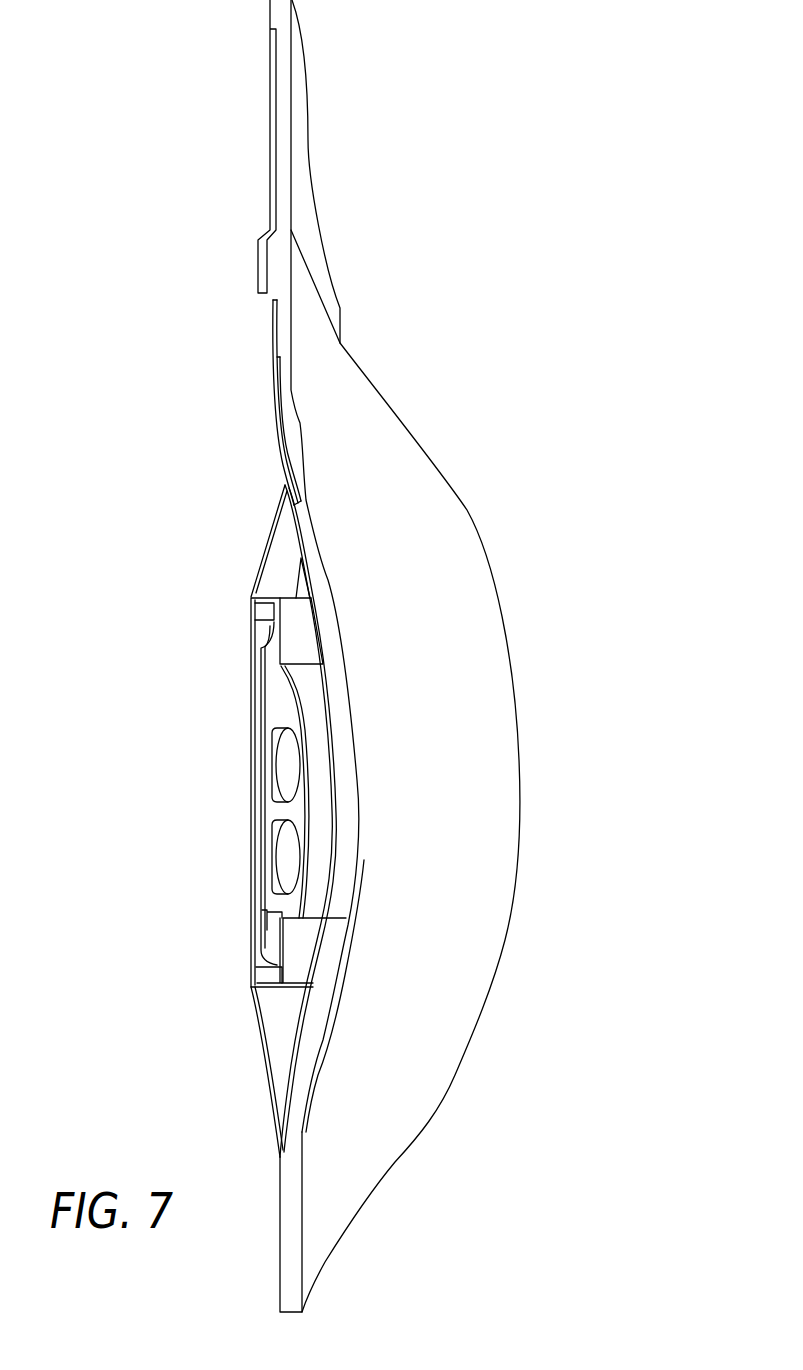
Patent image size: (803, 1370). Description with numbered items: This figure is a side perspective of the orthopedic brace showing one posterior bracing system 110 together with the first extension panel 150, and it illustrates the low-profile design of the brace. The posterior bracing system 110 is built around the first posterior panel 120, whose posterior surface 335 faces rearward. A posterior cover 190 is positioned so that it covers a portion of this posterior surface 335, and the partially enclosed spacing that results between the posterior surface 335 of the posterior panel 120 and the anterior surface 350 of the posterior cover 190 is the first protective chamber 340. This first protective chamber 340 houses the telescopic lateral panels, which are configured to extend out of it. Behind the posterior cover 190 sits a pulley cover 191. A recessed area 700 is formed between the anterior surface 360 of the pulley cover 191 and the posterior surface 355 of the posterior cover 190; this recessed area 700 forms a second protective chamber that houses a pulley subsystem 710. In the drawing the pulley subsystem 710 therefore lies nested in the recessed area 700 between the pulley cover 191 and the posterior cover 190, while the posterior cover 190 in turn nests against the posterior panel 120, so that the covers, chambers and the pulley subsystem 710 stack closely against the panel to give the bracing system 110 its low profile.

The posterior bracing system 110 is at (407, 298).
The first posterior panel 120 is at (517, 791).
The first extension panel 150 is at (295, 142).
The posterior cover 190 is at (266, 548).
The pulley cover 191 is at (252, 657).
The recessed area 700 is at (254, 628).
The pulley subsystem 710 is at (277, 808).
The posterior surface 335 is at (338, 713).
The first protective chamber 340 is at (322, 848).
The anterior surface 350 is at (302, 828).
The posterior surface 355 is at (278, 970).
The anterior surface 360 is at (257, 946).